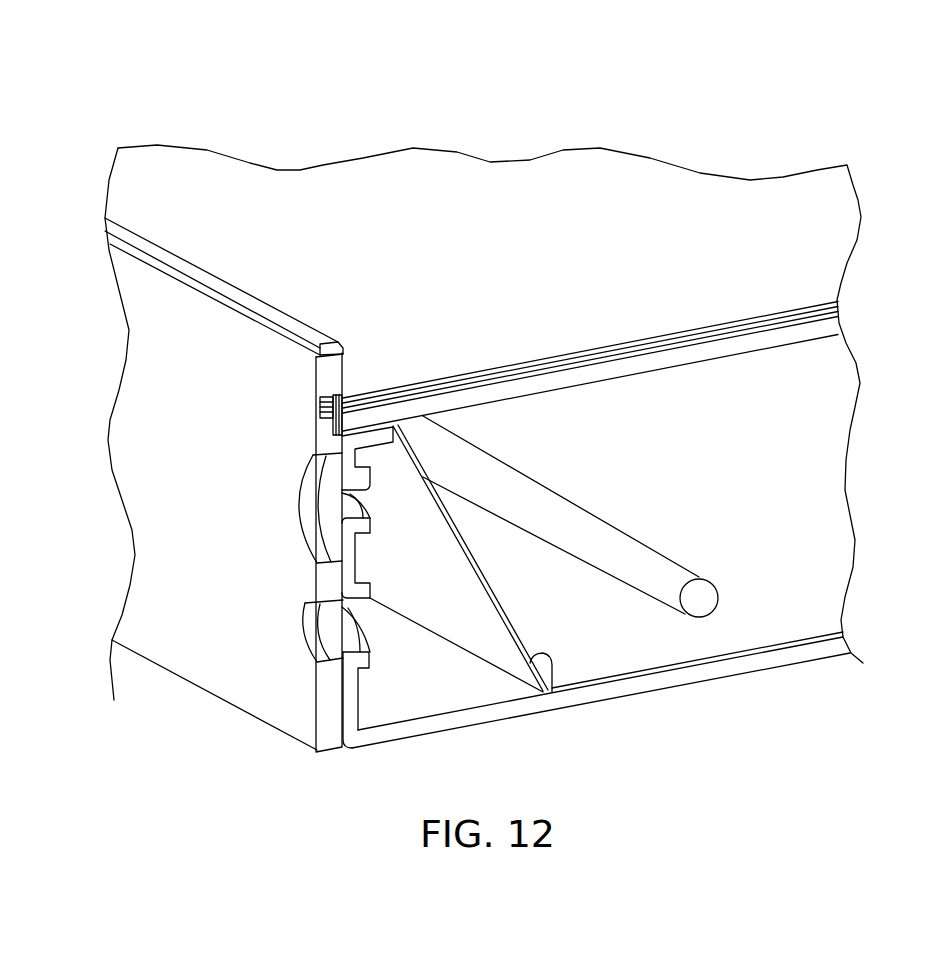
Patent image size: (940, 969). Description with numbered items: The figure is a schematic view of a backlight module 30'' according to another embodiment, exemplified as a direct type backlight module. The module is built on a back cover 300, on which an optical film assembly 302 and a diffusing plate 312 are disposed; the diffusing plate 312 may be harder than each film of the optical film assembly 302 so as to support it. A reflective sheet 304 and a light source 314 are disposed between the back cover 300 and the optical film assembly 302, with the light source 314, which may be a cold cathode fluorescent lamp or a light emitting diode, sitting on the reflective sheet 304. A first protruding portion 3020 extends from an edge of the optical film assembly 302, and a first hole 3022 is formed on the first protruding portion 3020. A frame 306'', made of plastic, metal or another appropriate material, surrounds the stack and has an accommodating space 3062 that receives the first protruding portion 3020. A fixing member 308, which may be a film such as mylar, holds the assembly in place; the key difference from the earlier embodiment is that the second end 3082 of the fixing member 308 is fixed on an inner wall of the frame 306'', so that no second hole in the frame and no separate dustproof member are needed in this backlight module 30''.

The backlight module 30'' is at (484, 419).
The back cover 300 is at (765, 652).
The optical film assembly 302 is at (820, 248).
The reflective sheet 304 is at (549, 686).
The frame 306'' is at (227, 552).
The fixing member 308 is at (349, 385).
The diffusing plate 312 is at (822, 327).
The light source 314 is at (658, 589).
The first protruding portion 3020 is at (322, 410).
The first hole 3022 is at (345, 397).
The accommodating space 3062 is at (327, 414).
The second end 3082 is at (347, 372).